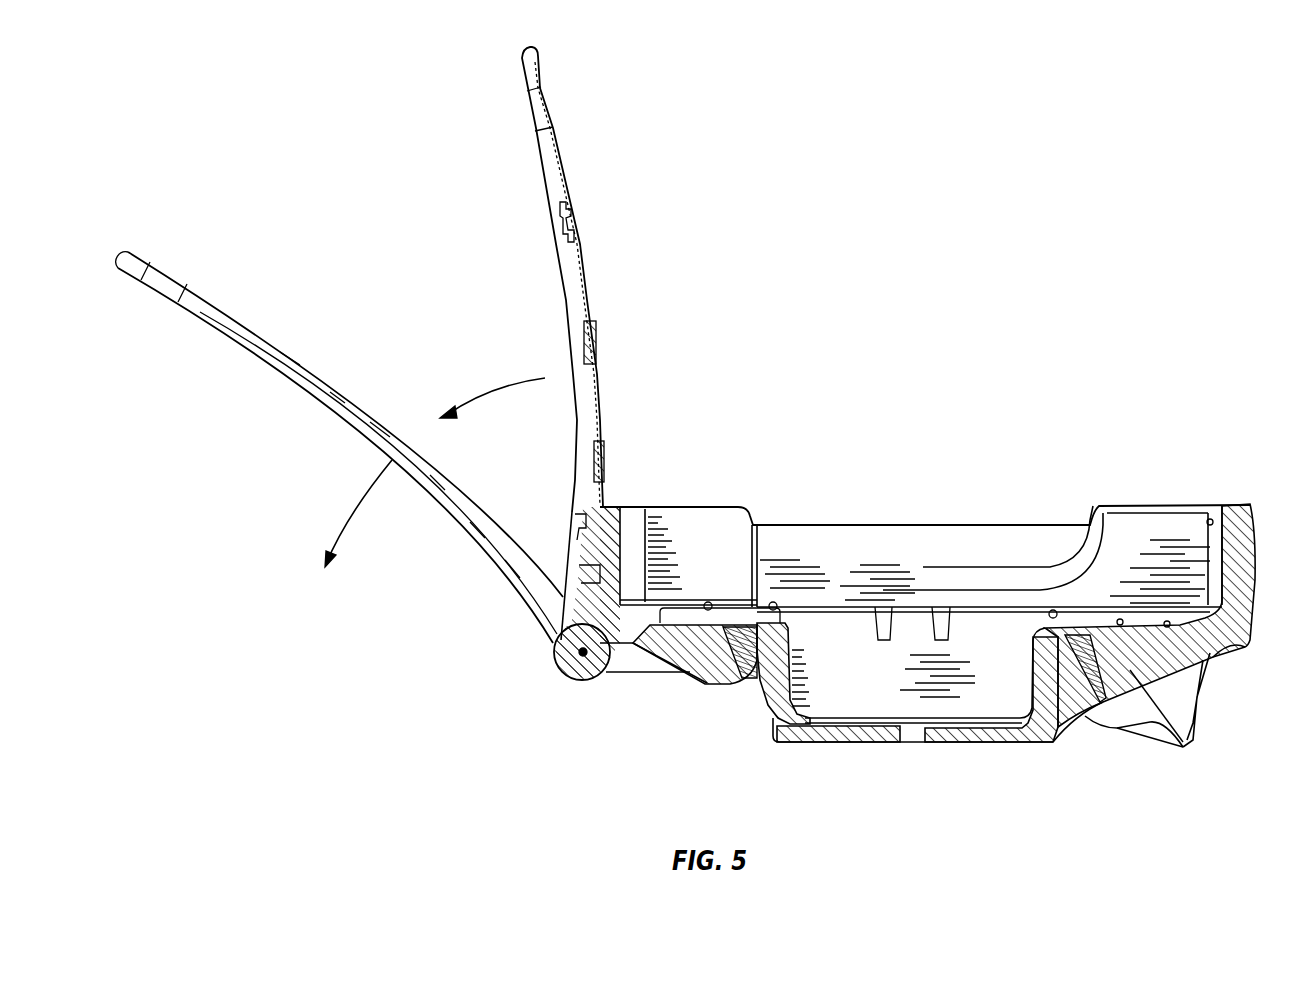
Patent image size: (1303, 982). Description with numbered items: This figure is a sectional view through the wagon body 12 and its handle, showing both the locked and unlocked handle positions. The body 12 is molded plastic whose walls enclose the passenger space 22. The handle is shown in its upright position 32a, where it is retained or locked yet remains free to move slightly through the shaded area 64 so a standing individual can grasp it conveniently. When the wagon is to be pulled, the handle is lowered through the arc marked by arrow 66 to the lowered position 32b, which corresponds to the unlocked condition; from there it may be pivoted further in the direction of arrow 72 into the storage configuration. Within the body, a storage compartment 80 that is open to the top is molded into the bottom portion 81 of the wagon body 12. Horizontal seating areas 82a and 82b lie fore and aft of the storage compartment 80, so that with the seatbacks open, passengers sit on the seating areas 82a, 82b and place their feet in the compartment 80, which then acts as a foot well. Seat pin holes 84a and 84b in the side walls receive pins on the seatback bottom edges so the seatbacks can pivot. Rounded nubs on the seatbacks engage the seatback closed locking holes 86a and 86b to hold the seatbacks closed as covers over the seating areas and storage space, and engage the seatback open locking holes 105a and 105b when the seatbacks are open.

The wagon body 12 is at (1002, 507).
The passenger space 22 is at (887, 540).
The handle upright position 32a is at (520, 70).
The handle lowered position 32b is at (170, 273).
The shaded area 64 is at (587, 268).
The arrow 66 is at (497, 390).
The arrow 72 is at (350, 508).
The storage compartment 80 is at (927, 705).
The bottom portion 81 is at (842, 740).
The horizontal seating area 82a is at (710, 606).
The horizontal seating area 82b is at (1185, 747).
The seat pin hole 84a is at (633, 630).
The seat pin hole 84b is at (1213, 657).
The seatback closed locking hole 86a is at (740, 640).
The seatback closed locking hole 86b is at (1103, 702).
The seatback open locking hole 105a is at (636, 512).
The seatback open locking hole 105b is at (1217, 504).